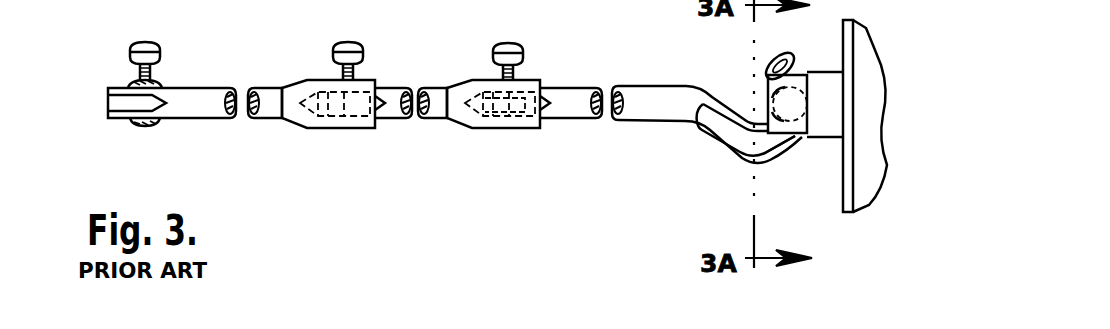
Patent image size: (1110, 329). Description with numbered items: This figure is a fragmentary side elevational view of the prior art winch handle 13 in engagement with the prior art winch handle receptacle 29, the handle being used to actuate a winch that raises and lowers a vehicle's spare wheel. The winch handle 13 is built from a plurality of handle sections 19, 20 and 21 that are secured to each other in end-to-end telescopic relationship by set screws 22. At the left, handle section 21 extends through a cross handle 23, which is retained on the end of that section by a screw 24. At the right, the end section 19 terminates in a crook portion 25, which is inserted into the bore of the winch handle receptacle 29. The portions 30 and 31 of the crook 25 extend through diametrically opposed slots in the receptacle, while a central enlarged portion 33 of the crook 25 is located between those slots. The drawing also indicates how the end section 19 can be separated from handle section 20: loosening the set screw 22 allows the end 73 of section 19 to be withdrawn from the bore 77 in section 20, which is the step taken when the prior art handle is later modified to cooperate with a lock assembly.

The winch handle 13 is at (304, 84).
The handle section 19 is at (578, 118).
The handle section 20 is at (388, 122).
The handle section 21 is at (218, 118).
The set screw 22 is at (356, 42).
The cross handle 23 is at (138, 126).
The screw 24 is at (143, 42).
The crook portion 25 is at (750, 162).
The winch handle receptacle 29 is at (823, 72).
The portion of crook 30 is at (790, 40).
The portion of crook 31 is at (768, 156).
The central enlarged portion 33 is at (765, 97).
The end of section 19 73 is at (505, 120).
The bore 77 is at (457, 88).